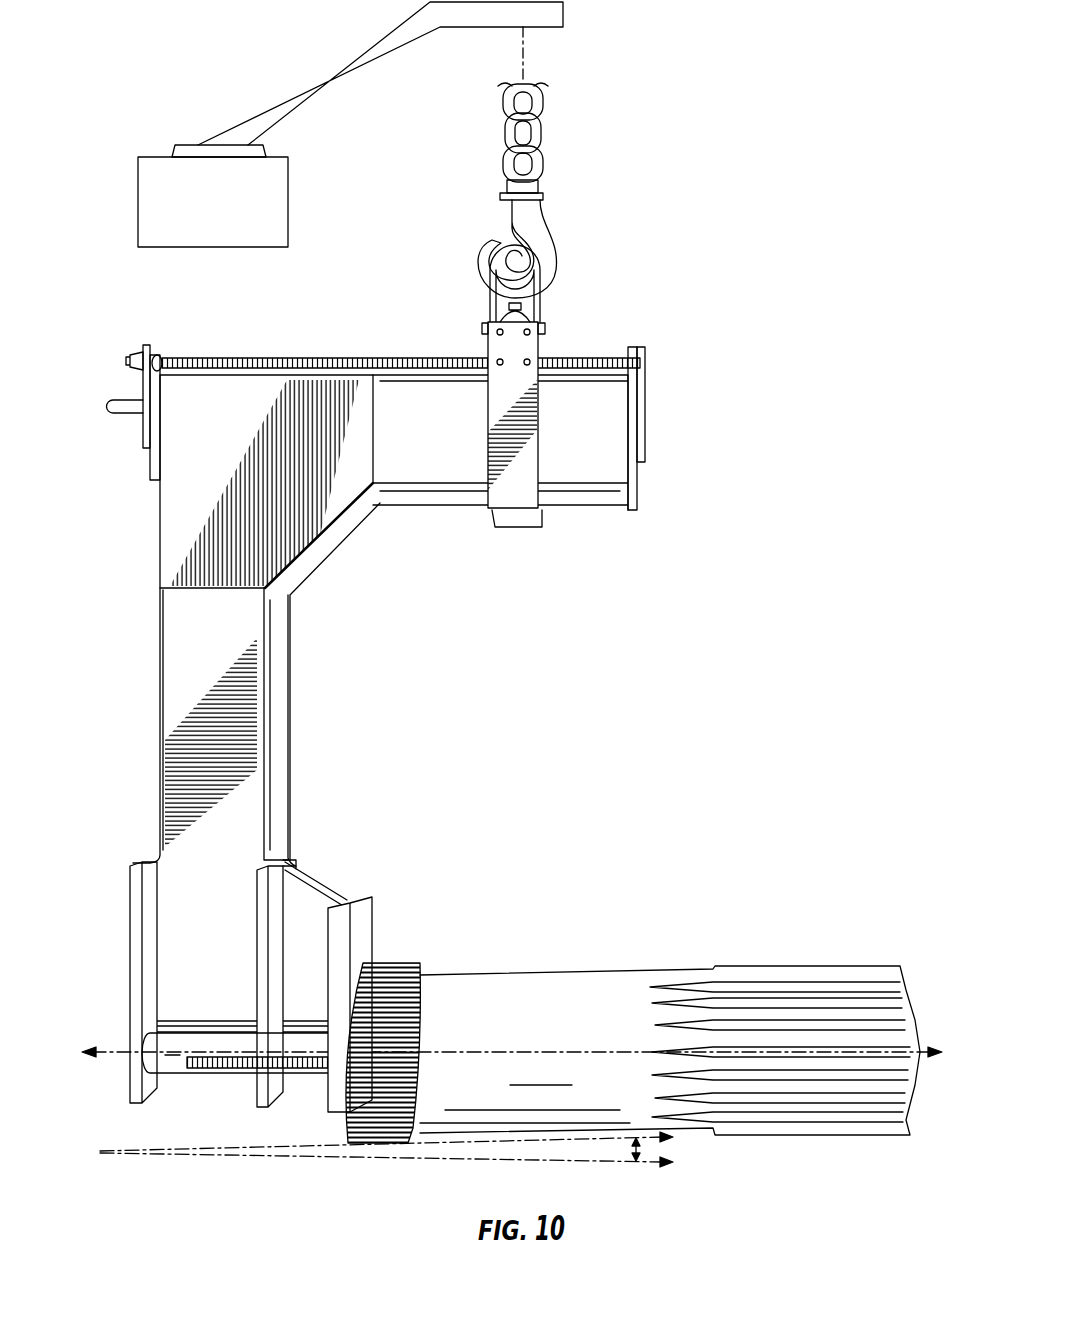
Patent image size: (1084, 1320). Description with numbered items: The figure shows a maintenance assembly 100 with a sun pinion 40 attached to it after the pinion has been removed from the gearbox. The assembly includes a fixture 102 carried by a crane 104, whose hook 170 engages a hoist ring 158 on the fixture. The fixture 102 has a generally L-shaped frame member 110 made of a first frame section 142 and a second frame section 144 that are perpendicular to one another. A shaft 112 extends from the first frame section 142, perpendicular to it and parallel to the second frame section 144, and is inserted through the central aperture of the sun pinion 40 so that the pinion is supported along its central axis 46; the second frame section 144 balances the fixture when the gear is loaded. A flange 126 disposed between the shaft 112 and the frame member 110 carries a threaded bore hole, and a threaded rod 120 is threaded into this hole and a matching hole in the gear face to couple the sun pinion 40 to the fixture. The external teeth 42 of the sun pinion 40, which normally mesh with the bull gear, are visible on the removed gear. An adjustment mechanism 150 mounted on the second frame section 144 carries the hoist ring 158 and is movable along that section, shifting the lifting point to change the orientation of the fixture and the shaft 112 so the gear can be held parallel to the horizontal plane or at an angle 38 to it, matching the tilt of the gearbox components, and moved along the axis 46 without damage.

The maintenance assembly 100 is at (152, 112).
The crane 104 is at (275, 87).
The hook 170 is at (547, 227).
The hoist ring 158 is at (547, 297).
The adjustment mechanism 150 is at (559, 333).
The fixture 102 is at (88, 440).
The frame member 110 is at (119, 609).
The second frame section 144 is at (440, 460).
The first frame section 142 is at (240, 663).
The flange 126 is at (342, 925).
The shaft 112 is at (307, 1050).
The central axis 46 is at (120, 1052).
The threaded rod 120 is at (310, 1067).
The external teeth 42 is at (417, 962).
The sun pinion 40 is at (612, 940).
The angle 38 is at (640, 1148).